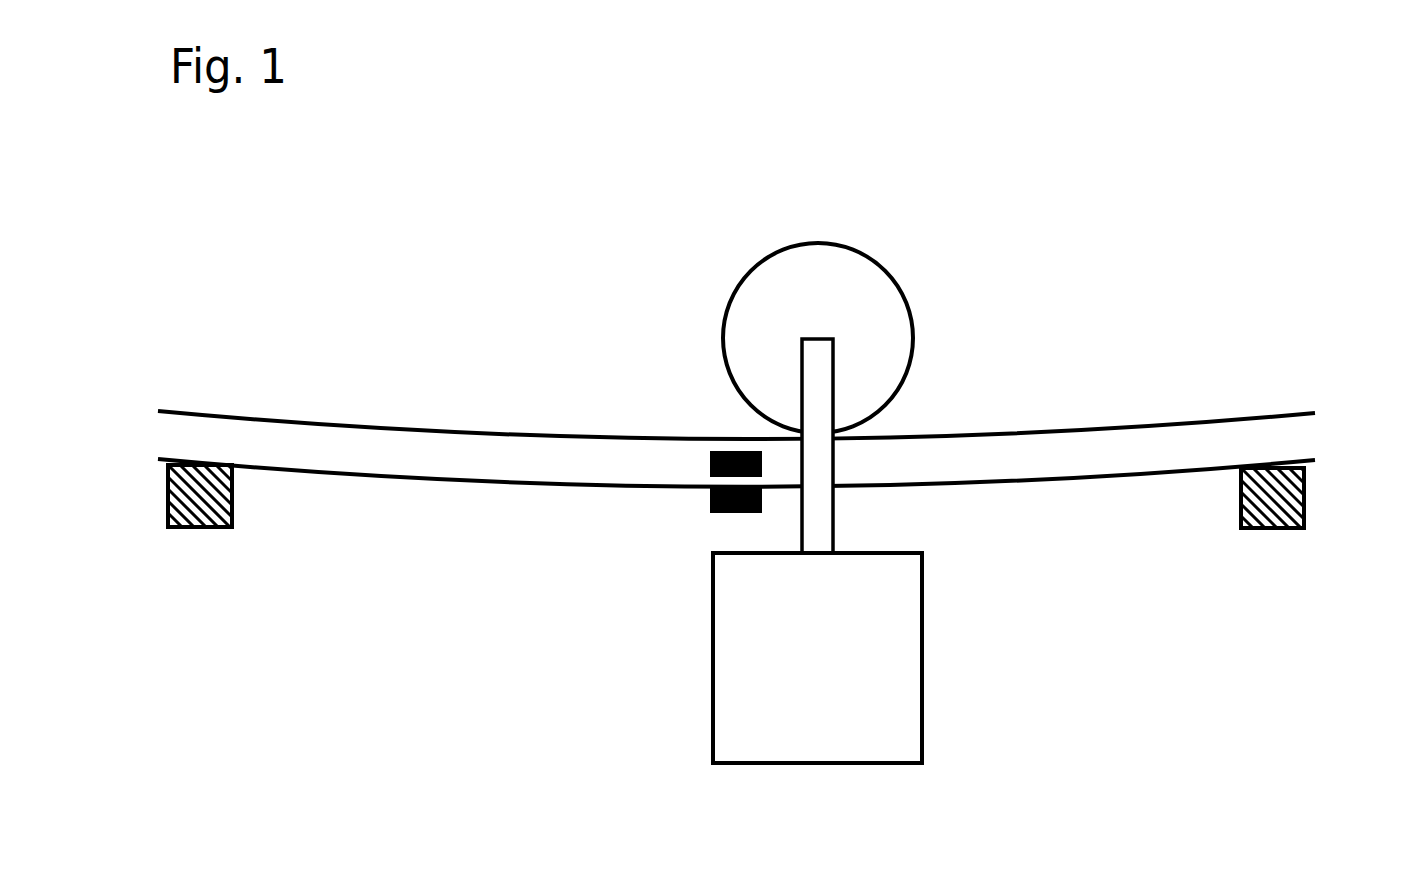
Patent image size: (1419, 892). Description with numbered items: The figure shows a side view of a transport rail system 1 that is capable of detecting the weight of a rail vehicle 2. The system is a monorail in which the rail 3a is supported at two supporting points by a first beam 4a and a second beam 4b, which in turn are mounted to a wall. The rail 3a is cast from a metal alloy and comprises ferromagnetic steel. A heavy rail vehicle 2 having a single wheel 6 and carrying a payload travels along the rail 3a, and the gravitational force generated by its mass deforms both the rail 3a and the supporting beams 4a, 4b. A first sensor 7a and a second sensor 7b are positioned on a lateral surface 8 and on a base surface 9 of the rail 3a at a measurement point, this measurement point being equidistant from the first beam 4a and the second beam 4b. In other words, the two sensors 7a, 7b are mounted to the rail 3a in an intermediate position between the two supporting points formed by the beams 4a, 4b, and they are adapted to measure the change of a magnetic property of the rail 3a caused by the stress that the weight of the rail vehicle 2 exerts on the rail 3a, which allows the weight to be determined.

The transport rail system 1 is at (165, 800).
The rail vehicle 2 is at (807, 672).
The rail 3a is at (736, 321).
The lateral surface 8 is at (736, 425).
The first beam 4a is at (205, 528).
The second beam 4b is at (1280, 528).
The wheel 6 is at (827, 287).
The first sensor 7a is at (715, 512).
The second sensor 7b is at (707, 453).
The base surface 9 is at (1122, 470).